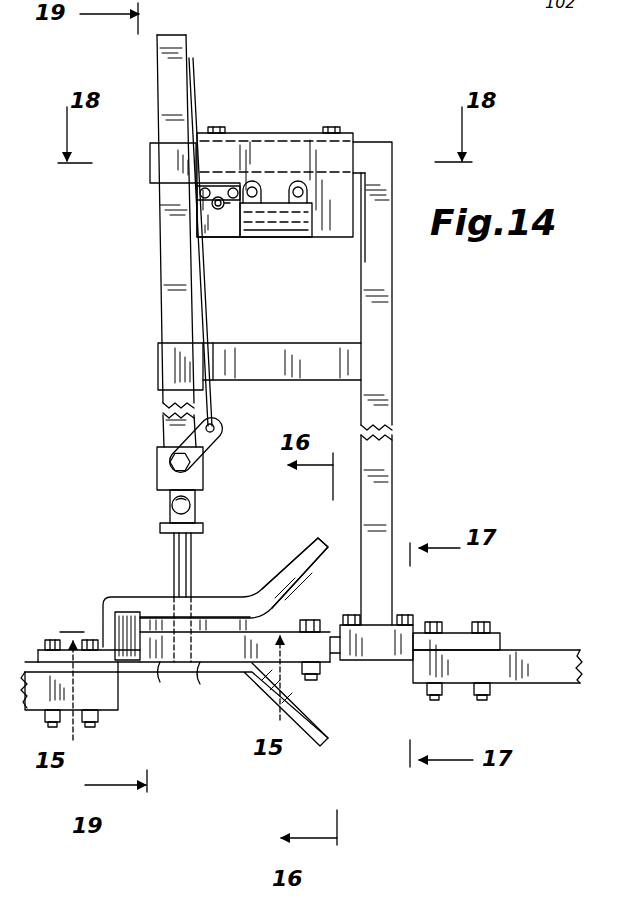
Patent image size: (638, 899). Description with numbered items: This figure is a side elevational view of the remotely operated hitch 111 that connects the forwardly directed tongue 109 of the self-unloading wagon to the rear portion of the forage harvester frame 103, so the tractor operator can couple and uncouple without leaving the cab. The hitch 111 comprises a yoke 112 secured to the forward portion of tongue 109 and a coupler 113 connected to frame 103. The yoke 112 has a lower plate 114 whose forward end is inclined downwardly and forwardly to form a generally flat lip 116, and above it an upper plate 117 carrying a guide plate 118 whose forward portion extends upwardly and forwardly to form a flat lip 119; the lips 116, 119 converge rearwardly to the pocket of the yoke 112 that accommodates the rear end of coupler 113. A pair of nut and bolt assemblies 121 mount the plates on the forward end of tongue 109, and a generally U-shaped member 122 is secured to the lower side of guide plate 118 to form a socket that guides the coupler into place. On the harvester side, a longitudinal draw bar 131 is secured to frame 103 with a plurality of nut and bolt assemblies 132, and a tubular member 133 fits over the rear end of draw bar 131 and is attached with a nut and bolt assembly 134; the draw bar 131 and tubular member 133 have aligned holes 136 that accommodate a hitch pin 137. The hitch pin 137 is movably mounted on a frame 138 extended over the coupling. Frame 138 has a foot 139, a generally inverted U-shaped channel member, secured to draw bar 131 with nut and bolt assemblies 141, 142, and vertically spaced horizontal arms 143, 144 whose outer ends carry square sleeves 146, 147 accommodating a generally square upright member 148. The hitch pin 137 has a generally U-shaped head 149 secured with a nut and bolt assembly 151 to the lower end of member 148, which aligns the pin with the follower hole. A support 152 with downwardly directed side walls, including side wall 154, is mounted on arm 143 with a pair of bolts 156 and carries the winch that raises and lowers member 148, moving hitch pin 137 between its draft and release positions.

The frame 103 is at (540, 655).
The tongue 109 is at (108, 702).
The hitch 111 is at (188, 738).
The yoke 112 is at (84, 596).
The coupler 113 is at (235, 665).
The lower plate 114 is at (150, 680).
The lip 116 is at (42, 700).
The upper plate 117 is at (126, 598).
The guide plate 118 is at (205, 608).
The lip 119 is at (314, 553).
The nut and bolt assemblies 121 is at (100, 634).
The U-shaped member 122 is at (222, 628).
The draw bar 131 is at (492, 636).
The nut and bolt assemblies 132 is at (434, 622).
The tubular member 133 is at (203, 683).
The nut and bolt assembly 134 is at (312, 620).
The aligned holes 136 is at (160, 668).
The hitch pin 137 is at (174, 548).
The frame 138 is at (322, 457).
The foot 139 is at (378, 648).
The nut and bolt assembly 141 is at (352, 615).
The nut and bolt assembly 142 is at (406, 615).
The horizontal arm 143 is at (365, 152).
The horizontal arm 144 is at (287, 355).
The square sleeve 146 is at (160, 168).
The square sleeve 147 is at (160, 370).
The upright member 148 is at (170, 282).
The U-shaped head 149 is at (200, 528).
The nut and bolt assembly 151 is at (176, 506).
The support 152 is at (280, 133).
The side wall 154 is at (338, 240).
The bolts 156 is at (218, 128).